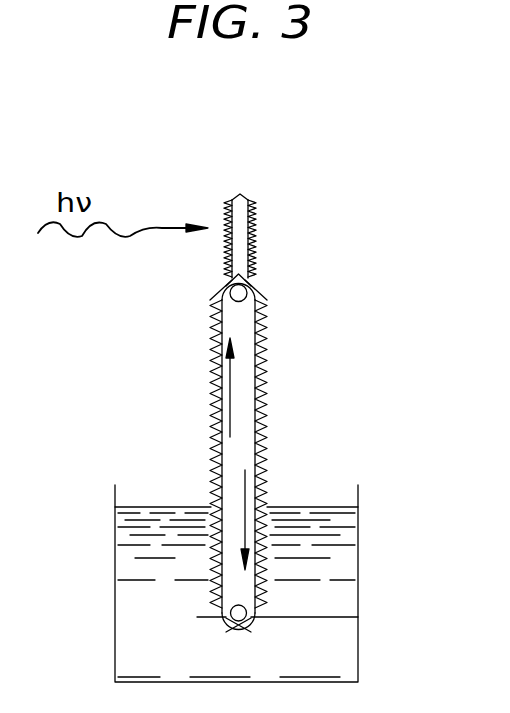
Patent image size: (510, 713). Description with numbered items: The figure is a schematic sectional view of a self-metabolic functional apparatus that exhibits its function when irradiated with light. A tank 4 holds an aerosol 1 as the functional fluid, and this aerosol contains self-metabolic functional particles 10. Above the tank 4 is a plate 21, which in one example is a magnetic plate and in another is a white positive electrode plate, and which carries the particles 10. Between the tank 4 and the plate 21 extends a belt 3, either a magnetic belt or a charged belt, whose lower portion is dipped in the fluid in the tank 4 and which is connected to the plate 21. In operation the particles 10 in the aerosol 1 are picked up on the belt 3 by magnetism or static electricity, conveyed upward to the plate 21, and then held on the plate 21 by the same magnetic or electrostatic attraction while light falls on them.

The aerosol 1 is at (340, 640).
The belt 3 is at (266, 432).
The tank 4 is at (359, 563).
The self-metabolic functional particles 10 is at (222, 250).
The plate 21 is at (235, 198).